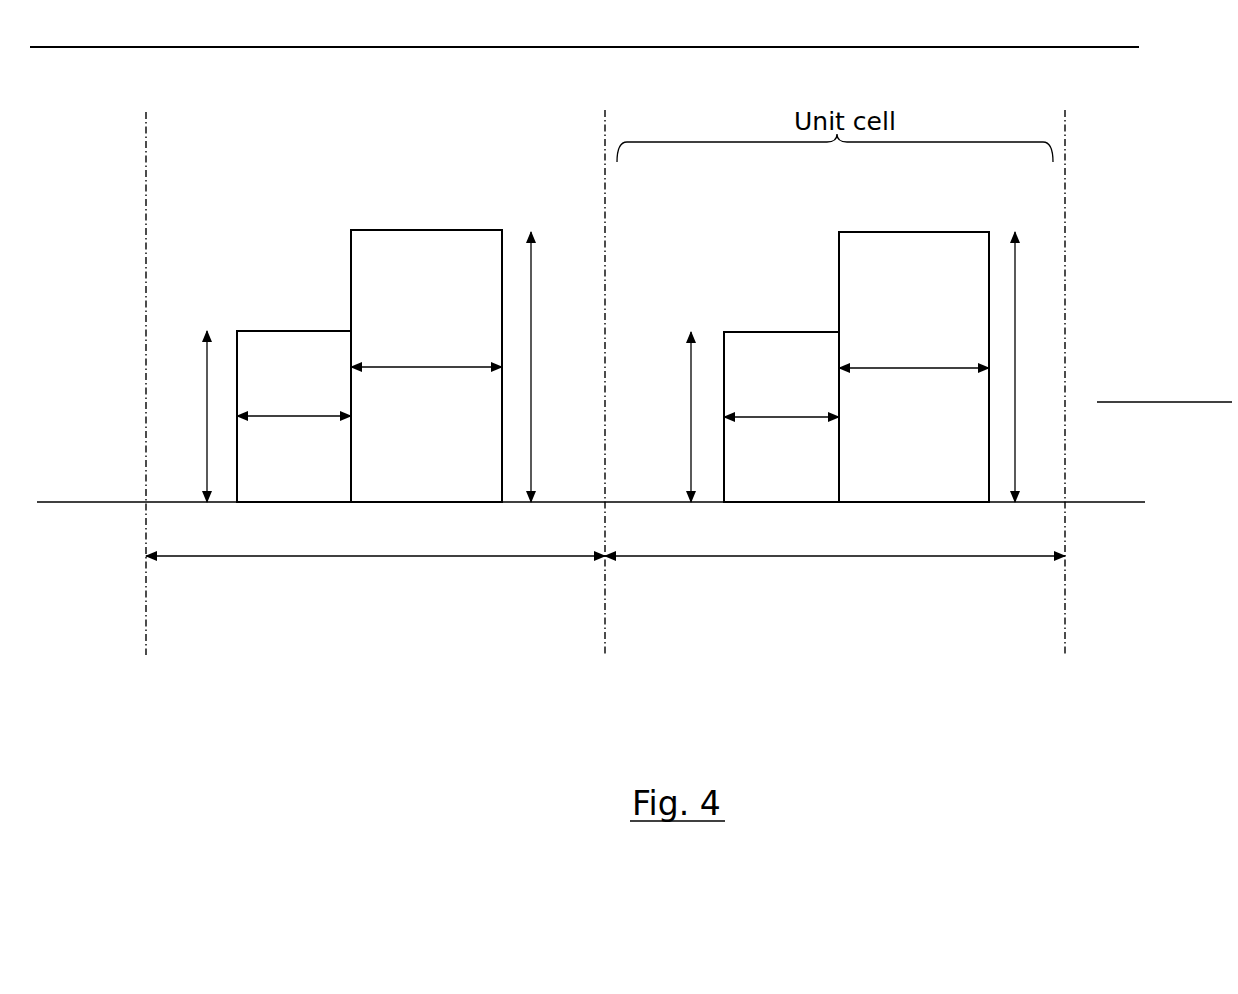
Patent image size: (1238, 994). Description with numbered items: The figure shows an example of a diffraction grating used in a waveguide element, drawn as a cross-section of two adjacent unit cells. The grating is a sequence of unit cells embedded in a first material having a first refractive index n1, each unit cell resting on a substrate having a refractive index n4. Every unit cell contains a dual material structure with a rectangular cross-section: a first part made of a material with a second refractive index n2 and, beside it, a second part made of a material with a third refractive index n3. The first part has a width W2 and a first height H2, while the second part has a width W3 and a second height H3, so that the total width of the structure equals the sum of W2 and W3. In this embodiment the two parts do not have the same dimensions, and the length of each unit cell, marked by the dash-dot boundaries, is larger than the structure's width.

The first refractive index n1 is at (584, 77).
The second refractive index n2 is at (538, 416).
The third refractive index n3 is at (670, 366).
The refractive index of the substrate n4 is at (591, 594).
The first height H2 is at (428, 416).
The second height H3 is at (793, 367).
The width of the first part W2 is at (538, 400).
The width of the second part W3 is at (670, 351).